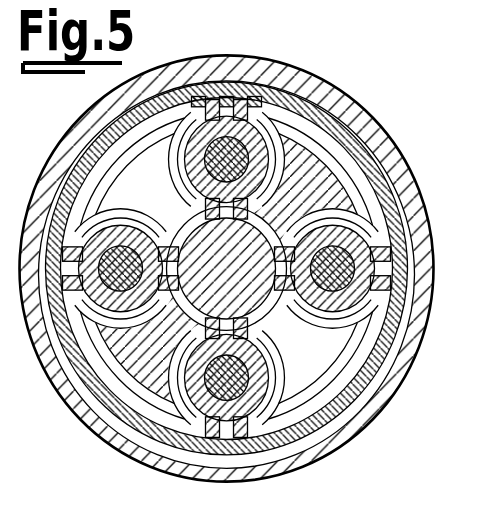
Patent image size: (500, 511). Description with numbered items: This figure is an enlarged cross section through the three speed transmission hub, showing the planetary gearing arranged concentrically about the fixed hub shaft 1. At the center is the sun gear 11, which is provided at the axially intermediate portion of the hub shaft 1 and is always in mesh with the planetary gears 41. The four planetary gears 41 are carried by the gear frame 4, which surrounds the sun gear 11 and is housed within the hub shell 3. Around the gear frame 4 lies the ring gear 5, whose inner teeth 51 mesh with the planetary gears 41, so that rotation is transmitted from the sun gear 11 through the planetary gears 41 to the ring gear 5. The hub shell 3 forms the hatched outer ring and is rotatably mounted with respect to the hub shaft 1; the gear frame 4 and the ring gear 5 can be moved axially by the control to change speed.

The hub shaft 1 is at (258, 287).
The sun gear 11 is at (262, 312).
The hub shell 3 is at (340, 102).
The gear frame 4 is at (333, 178).
The planetary gears 41 is at (370, 248).
The ring gear 5 is at (358, 153).
The inner teeth 51 is at (232, 93).